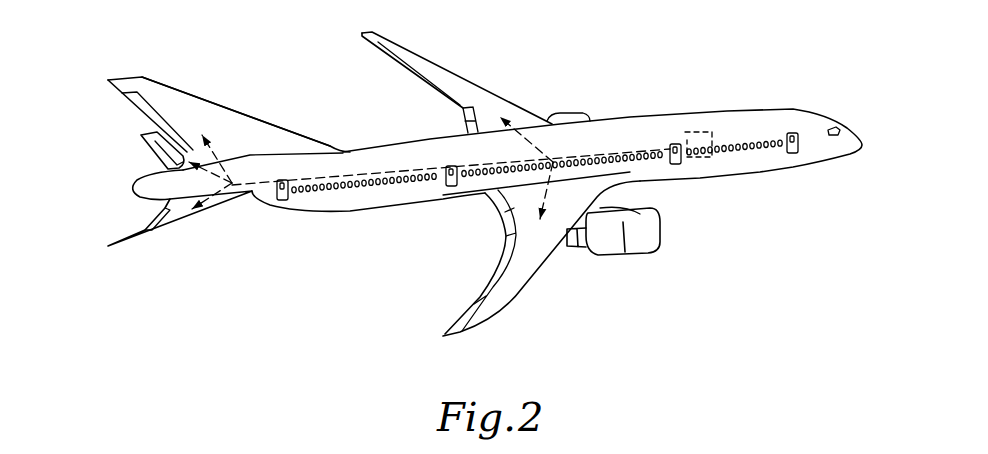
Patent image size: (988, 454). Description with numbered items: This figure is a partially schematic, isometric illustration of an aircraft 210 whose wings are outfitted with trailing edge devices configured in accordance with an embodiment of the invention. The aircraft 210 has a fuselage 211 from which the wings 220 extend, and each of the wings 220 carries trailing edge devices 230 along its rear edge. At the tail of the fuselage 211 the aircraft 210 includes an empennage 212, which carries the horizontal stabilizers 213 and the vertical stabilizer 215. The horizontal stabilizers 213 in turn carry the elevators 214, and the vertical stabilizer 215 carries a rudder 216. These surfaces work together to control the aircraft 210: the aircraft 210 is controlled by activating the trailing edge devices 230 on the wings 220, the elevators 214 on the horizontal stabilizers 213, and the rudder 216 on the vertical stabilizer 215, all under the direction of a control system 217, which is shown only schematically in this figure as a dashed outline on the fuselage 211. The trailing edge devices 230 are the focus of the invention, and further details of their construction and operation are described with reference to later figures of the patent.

The aircraft 210 is at (452, 173).
The fuselage 211 is at (778, 160).
The empennage 212 is at (205, 77).
The horizontal stabilizers 213 is at (145, 130).
The elevators 214 is at (146, 146).
The vertical stabilizer 215 is at (198, 98).
The rudder 216 is at (132, 105).
The control system 217 is at (710, 132).
The wings 220 is at (465, 188).
The trailing edge devices 230 is at (396, 70).